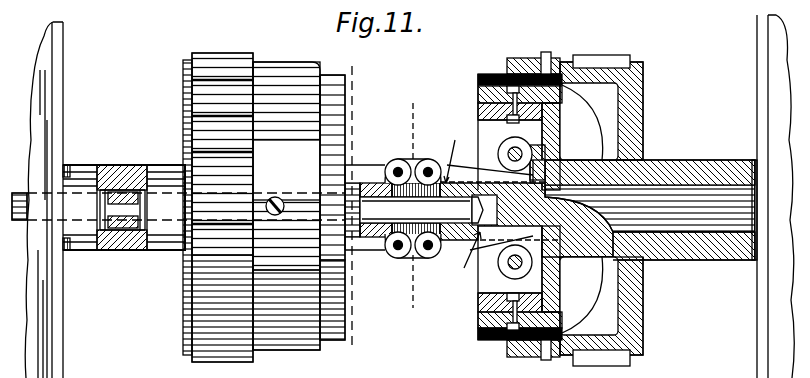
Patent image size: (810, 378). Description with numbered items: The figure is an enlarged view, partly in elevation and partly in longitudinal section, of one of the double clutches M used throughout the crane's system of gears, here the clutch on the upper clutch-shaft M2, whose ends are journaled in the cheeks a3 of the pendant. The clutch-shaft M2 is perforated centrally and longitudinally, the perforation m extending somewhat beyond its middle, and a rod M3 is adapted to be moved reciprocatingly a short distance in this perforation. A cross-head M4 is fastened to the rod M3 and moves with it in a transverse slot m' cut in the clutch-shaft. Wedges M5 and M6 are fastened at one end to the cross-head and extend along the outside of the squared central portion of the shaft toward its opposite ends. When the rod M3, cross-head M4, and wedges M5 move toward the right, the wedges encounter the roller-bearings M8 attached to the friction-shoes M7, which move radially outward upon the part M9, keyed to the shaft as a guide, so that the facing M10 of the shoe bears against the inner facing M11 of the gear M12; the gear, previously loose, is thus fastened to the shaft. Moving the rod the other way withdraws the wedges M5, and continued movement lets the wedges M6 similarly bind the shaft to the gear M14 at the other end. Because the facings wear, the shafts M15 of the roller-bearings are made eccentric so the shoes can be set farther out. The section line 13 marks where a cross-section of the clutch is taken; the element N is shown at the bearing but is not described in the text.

The cheeks of the pendant a3 is at (409, 196).
The double clutch M is at (409, 88).
The clutch-shaft M2 is at (127, 165).
The rod M3 is at (251, 202).
The cross-head M4 is at (432, 160).
The wedges M5 is at (500, 205).
The wedges M6 is at (392, 208).
The friction-shoes M7 is at (510, 208).
The roller-bearings M8 is at (508, 208).
The guide part M9 is at (598, 208).
The facing of the shoe M10 is at (478, 99).
The facing of the gear M11 is at (441, 198).
The gear M12 is at (406, 200).
The gear M14 is at (611, 55).
The shafts of the roller-bearings M15 is at (539, 162).
The roller bearing N is at (122, 210).
The perforation m is at (470, 258).
The slot m' is at (451, 152).
The section line 13 is at (382, 209).